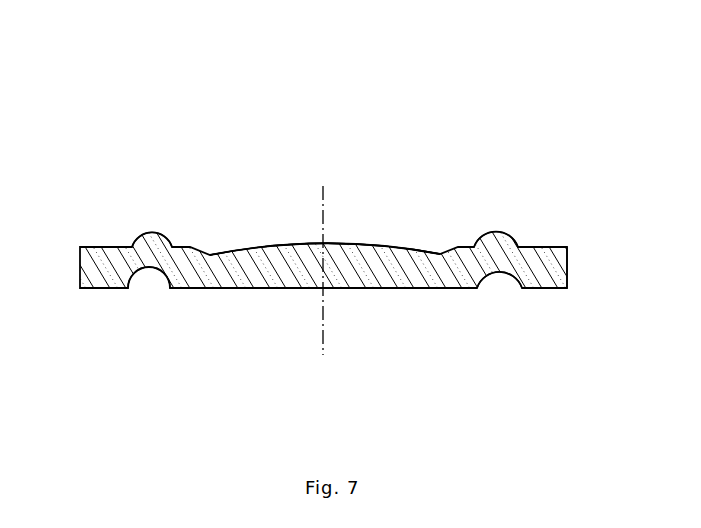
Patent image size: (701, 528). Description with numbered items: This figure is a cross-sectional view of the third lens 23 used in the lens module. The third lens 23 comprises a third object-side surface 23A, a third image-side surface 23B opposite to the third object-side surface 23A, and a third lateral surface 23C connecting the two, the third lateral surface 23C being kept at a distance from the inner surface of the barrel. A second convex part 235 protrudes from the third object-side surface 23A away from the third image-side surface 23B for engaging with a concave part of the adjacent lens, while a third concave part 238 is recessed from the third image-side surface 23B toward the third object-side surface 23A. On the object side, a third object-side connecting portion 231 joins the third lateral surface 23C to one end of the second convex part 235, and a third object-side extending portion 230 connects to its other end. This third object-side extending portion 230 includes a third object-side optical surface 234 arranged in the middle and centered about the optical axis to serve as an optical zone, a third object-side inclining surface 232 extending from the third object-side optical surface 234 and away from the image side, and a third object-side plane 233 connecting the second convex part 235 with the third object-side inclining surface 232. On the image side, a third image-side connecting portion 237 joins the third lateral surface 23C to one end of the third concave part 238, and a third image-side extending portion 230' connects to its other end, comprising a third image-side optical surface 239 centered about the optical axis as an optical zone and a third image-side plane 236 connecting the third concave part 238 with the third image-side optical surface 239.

The third lens 23 is at (325, 45).
The third object-side extending portion 230 is at (342, 190).
The third image-side extending portion 230' is at (419, 352).
The third object-side connecting portion 231 is at (100, 250).
The third object-side inclining surface 232 is at (447, 252).
The third object-side plane 233 is at (185, 247).
The third object-side optical surface 234 is at (346, 243).
The second convex part 235 is at (141, 236).
The third image-side plane 236 is at (463, 288).
The third image-side connecting portion 237 is at (102, 288).
The third concave part 238 is at (149, 275).
The third image-side optical surface 239 is at (362, 288).
The third object-side surface 23A is at (550, 207).
The third image-side surface 23B is at (549, 316).
The third lateral surface 23C is at (567, 267).